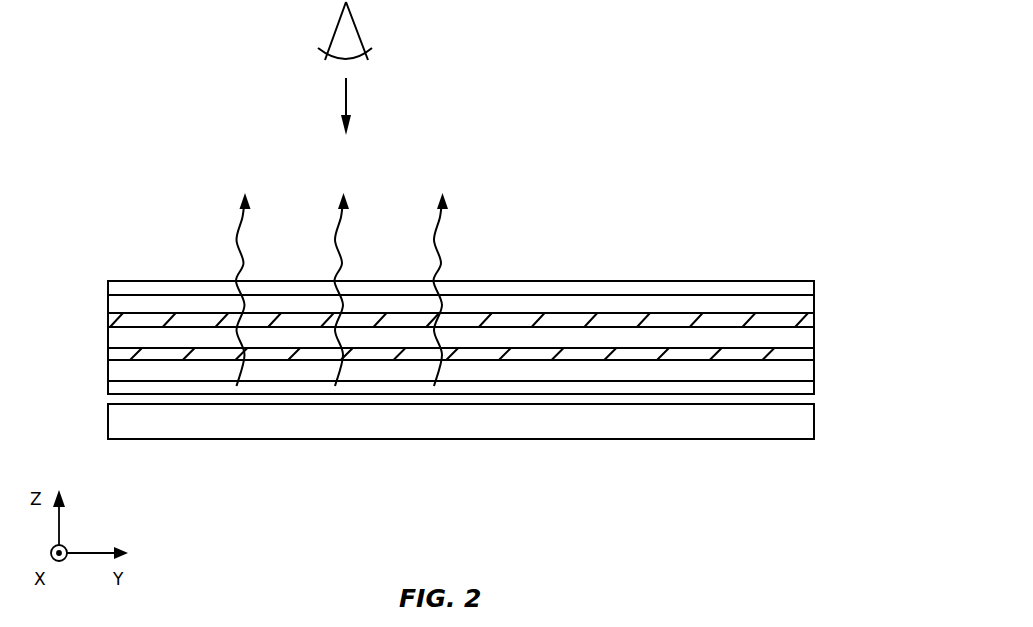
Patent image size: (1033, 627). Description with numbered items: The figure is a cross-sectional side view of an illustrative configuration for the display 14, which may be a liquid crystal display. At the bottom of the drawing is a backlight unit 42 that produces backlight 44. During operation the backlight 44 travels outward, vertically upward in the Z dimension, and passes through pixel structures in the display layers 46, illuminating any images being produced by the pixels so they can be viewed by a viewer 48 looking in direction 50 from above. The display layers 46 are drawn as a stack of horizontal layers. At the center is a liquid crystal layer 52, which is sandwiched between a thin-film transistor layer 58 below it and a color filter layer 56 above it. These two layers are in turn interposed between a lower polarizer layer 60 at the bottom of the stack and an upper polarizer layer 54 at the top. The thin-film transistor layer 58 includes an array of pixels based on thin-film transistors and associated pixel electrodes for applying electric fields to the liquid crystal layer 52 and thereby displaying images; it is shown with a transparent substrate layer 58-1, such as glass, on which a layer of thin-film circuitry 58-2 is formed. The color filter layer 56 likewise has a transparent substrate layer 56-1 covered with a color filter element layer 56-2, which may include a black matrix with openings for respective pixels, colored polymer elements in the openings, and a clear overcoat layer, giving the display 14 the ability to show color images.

The display 14 is at (742, 224).
The backlight unit 42 is at (816, 419).
The backlight 44 is at (338, 265).
The display layers 46 is at (907, 280).
The viewer 48 is at (348, 100).
The direction 50 is at (357, 30).
The liquid crystal layer 52 is at (107, 338).
The upper polarizer layer 54 is at (107, 288).
The color filter layer 56 is at (102, 295).
The substrate layer 56-1 is at (816, 304).
The color filter element layer 56-2 is at (816, 320).
The thin-film transistor layer 58 is at (102, 348).
The substrate layer 58-1 is at (816, 370).
The layer of thin-film circuitry 58-2 is at (816, 354).
The lower polarizer layer 60 is at (107, 387).